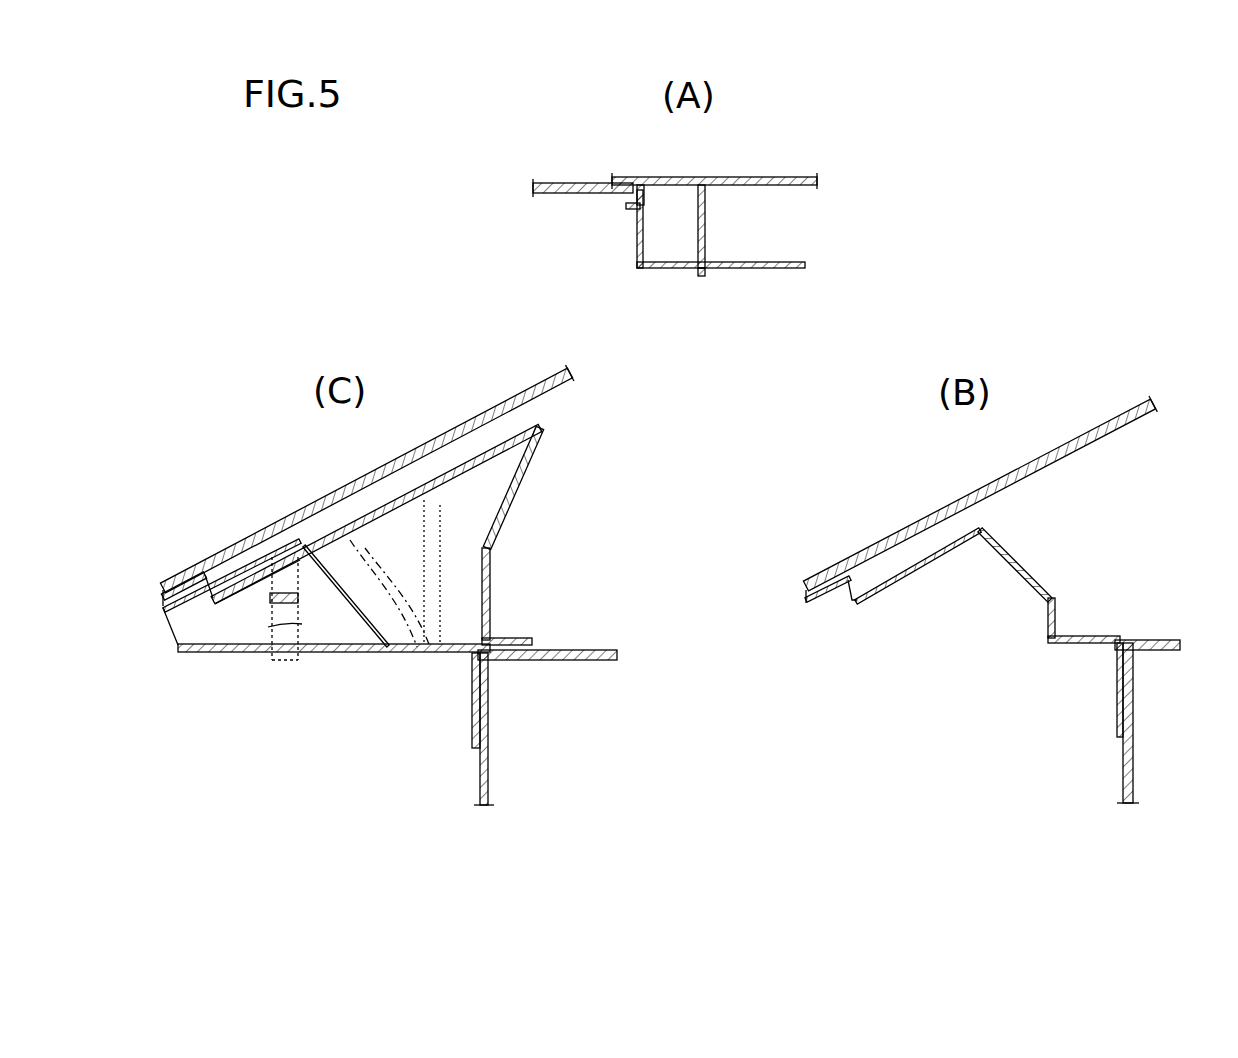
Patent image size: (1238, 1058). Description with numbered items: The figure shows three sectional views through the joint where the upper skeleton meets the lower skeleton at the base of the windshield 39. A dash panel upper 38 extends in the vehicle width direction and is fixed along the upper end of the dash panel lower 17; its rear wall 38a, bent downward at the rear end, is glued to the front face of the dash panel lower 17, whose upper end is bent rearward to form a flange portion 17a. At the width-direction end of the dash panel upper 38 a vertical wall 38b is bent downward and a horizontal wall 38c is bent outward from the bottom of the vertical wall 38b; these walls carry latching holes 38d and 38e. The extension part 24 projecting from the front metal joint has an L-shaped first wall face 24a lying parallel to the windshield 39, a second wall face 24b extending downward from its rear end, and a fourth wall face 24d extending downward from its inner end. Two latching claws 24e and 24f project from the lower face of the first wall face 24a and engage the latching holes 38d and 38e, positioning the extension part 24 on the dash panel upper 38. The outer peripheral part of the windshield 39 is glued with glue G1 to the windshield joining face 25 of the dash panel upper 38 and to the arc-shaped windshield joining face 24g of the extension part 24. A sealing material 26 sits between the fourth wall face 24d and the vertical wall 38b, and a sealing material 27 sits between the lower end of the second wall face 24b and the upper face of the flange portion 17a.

The dash panel lower 17 is at (490, 785).
The flange portion 17a is at (582, 660).
The extension part 24 is at (504, 410).
The first wall face 24a is at (742, 178).
The second wall face 24b is at (520, 493).
The fourth wall face 24d is at (462, 575).
The latching claw 24e is at (651, 207).
The latching claw 24f is at (707, 212).
The windshield joining face 24g is at (185, 578).
The windshield joining face 25 is at (830, 578).
The sealing material 26 is at (378, 582).
The sealing material 27 is at (535, 640).
The dash panel upper 38 is at (647, 452).
The rear wall 38a is at (470, 718).
The vertical wall 38b is at (634, 243).
The horizontal wall 38c is at (763, 270).
The latching hole 38d is at (630, 208).
The latching hole 38e is at (700, 278).
The windshield 39 is at (512, 393).
The glue G1 is at (165, 582).